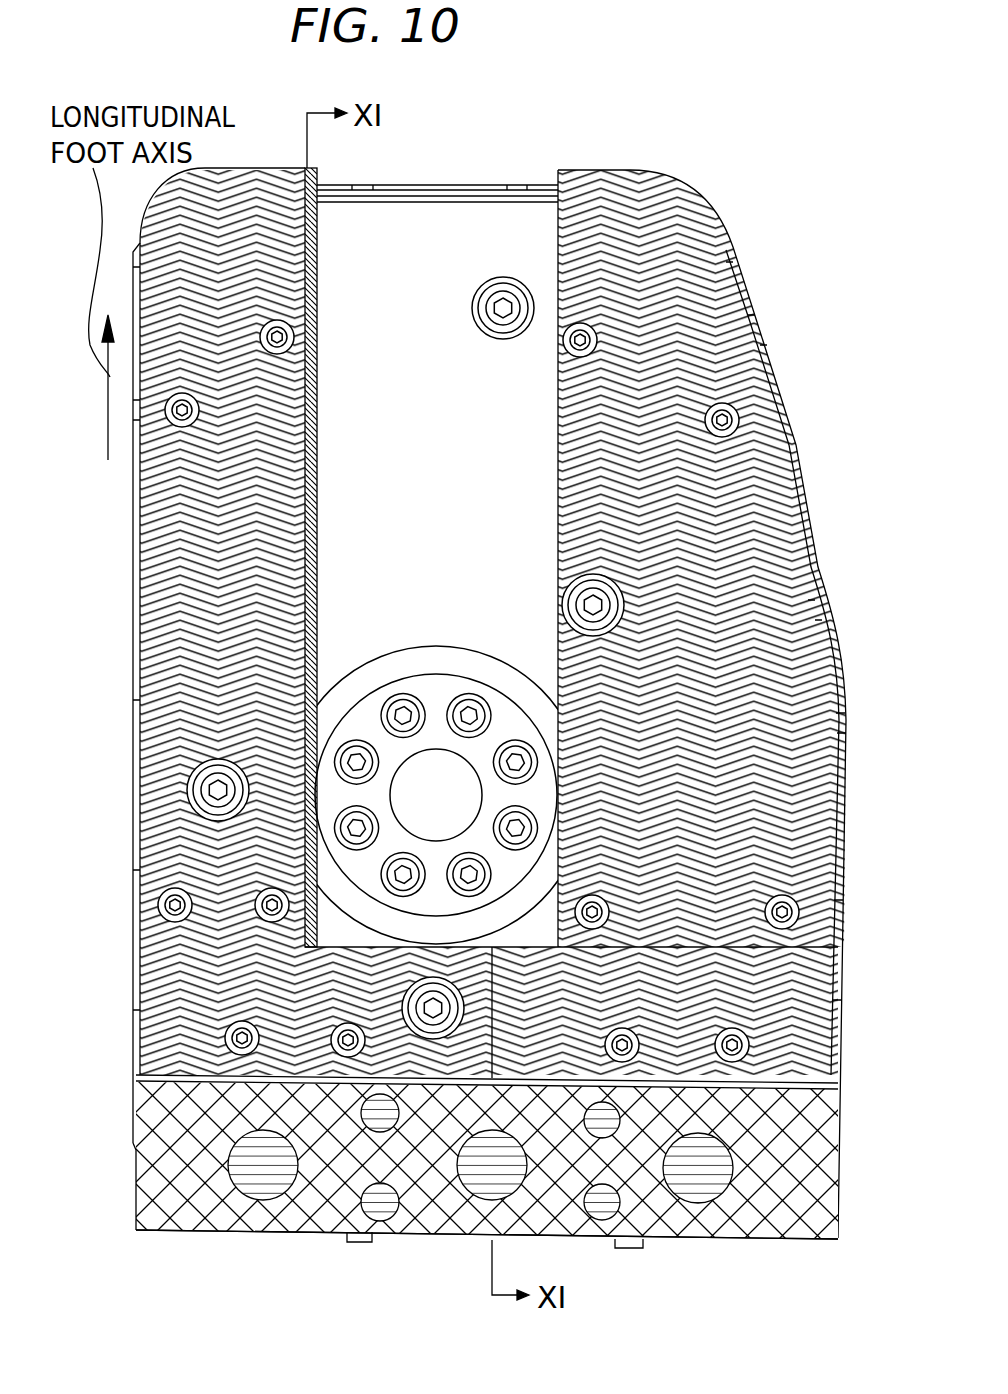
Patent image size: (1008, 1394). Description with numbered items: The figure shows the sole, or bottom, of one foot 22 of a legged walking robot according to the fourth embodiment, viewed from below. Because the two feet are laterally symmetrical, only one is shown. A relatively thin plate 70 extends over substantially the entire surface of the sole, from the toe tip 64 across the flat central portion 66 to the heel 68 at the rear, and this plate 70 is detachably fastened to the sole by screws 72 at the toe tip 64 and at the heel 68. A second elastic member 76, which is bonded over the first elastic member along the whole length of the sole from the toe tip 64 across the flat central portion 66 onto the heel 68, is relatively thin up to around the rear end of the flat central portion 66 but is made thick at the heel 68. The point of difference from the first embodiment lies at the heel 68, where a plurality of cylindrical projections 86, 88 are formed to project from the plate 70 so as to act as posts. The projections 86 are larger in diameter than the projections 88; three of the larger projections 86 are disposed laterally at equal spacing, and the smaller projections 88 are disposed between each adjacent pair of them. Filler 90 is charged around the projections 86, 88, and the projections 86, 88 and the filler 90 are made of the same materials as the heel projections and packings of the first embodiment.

The foot 22 is at (668, 180).
The toe tip 64 is at (425, 186).
The flat central portion 66 is at (804, 492).
The heel 68 is at (820, 1247).
The plate 70 is at (452, 495).
The screws 72 is at (362, 1245).
The second elastic member 76 is at (806, 988).
The cylindrical projections (large diameter) 86 is at (694, 1193).
The cylindrical projections (small diameter) 88 is at (360, 1112).
The filler 90 is at (798, 1154).